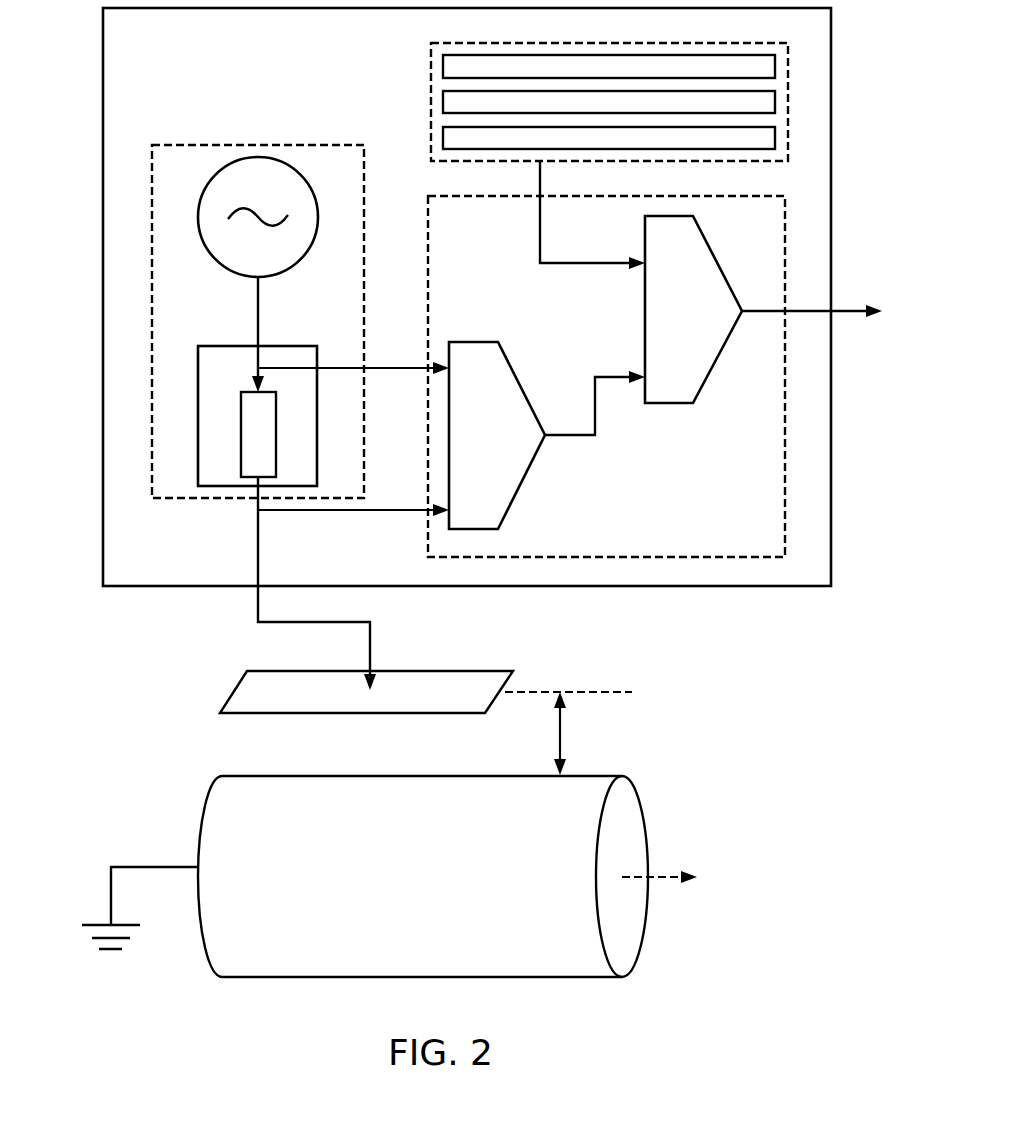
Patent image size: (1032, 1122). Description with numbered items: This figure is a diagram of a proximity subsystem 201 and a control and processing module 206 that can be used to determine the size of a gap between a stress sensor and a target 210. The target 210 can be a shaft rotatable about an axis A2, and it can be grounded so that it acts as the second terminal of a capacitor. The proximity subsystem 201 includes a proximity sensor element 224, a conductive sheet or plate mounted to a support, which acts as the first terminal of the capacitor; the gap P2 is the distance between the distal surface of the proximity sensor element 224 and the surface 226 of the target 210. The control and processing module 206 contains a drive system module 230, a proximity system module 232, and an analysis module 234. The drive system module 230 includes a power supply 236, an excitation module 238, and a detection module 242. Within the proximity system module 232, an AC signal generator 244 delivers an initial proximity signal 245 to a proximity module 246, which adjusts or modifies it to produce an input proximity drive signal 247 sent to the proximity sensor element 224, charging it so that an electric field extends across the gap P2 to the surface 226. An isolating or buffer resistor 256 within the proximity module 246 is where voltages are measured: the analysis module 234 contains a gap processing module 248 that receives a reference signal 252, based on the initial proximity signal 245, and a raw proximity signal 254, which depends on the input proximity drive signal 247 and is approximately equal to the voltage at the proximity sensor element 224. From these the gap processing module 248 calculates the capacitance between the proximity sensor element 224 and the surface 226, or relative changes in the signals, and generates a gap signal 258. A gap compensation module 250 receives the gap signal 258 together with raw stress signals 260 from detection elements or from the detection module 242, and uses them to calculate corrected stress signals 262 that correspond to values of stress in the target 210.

The proximity subsystem 201 is at (314, 662).
The control and processing module 206 is at (683, 586).
The target 210 is at (434, 849).
The proximity sensor element 224 is at (492, 672).
The surface 226 is at (455, 776).
The drive system module 230 is at (431, 70).
The proximity system module 232 is at (225, 145).
The analysis module 234 is at (785, 452).
The power supply 236 is at (775, 67).
The excitation module 238 is at (775, 103).
The detection module 242 is at (775, 139).
The AC signal generator 244 is at (203, 186).
The initial proximity signal 245 is at (258, 313).
The proximity module 246 is at (215, 346).
The input proximity drive signal 247 is at (370, 648).
The gap processing module 248 is at (520, 483).
The gap compensation module 250 is at (712, 395).
The reference signal 252 is at (397, 367).
The raw proximity signal 254 is at (345, 510).
The sensing resistor 256 is at (241, 437).
The gap signal 258 is at (597, 423).
The raw stress signals 260 is at (540, 235).
The corrected stress signals 262 is at (857, 308).
The gap P2 is at (565, 732).
The axis A2 is at (670, 874).